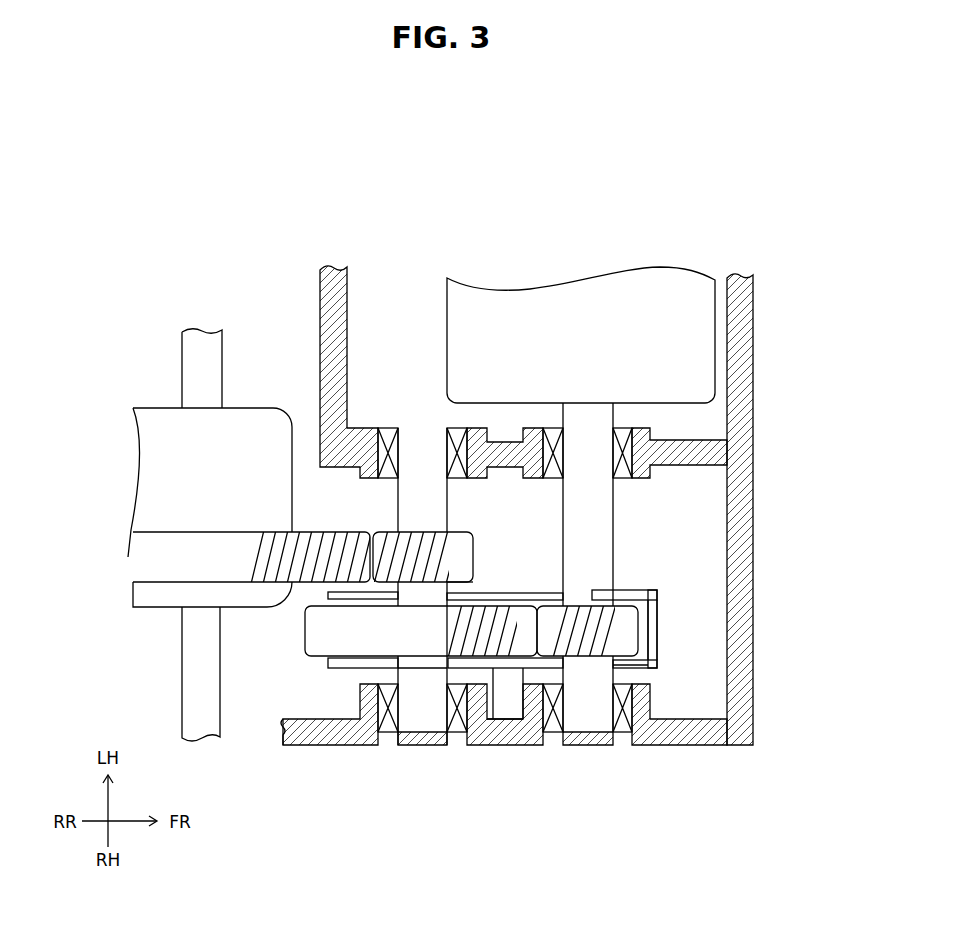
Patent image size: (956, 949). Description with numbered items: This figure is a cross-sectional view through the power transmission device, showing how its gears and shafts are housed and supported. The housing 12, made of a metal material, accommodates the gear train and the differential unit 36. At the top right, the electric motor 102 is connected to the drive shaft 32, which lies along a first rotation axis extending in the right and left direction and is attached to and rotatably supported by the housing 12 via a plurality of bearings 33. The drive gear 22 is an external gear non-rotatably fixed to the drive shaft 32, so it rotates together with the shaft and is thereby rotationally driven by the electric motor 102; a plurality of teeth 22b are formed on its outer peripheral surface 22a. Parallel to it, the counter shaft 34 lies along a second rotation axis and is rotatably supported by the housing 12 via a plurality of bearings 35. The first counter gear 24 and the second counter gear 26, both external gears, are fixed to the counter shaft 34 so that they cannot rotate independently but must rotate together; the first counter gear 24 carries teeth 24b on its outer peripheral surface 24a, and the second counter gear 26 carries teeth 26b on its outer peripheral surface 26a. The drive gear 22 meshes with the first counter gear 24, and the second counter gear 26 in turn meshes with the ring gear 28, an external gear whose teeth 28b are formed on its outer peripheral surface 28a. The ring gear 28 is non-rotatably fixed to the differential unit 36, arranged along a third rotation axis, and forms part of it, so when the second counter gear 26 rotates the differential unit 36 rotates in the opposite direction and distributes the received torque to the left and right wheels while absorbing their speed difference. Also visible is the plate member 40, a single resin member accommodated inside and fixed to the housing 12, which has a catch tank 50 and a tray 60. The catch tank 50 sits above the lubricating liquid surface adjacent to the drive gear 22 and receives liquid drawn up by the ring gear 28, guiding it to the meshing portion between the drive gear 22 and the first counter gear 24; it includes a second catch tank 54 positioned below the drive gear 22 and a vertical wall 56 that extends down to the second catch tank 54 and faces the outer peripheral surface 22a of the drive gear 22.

The housing 12 is at (740, 284).
The electric motor 102 is at (615, 295).
The drive shaft 32 is at (592, 520).
The bearings 33 is at (650, 433).
The bearings 35 is at (388, 427).
The second counter gear 26 is at (423, 506).
The outer peripheral surface 26a is at (468, 556).
The teeth 26b is at (437, 560).
The counter shaft 34 is at (425, 695).
The ring gear 28 is at (174, 512).
The outer peripheral surface 28a is at (128, 557).
The teeth 28b is at (333, 553).
The differential unit 36 is at (167, 425).
The first counter gear 24 is at (348, 664).
The outer peripheral surface 24a is at (320, 628).
The teeth 24b is at (477, 645).
The drive gear 22 is at (640, 617).
The outer peripheral surface 22a is at (652, 630).
The teeth 22b is at (655, 647).
The plate member 40 is at (513, 682).
The tray 60 is at (497, 725).
The catch tank 50 is at (648, 663).
The second catch tank 54 is at (636, 668).
The vertical wall 56 is at (656, 672).